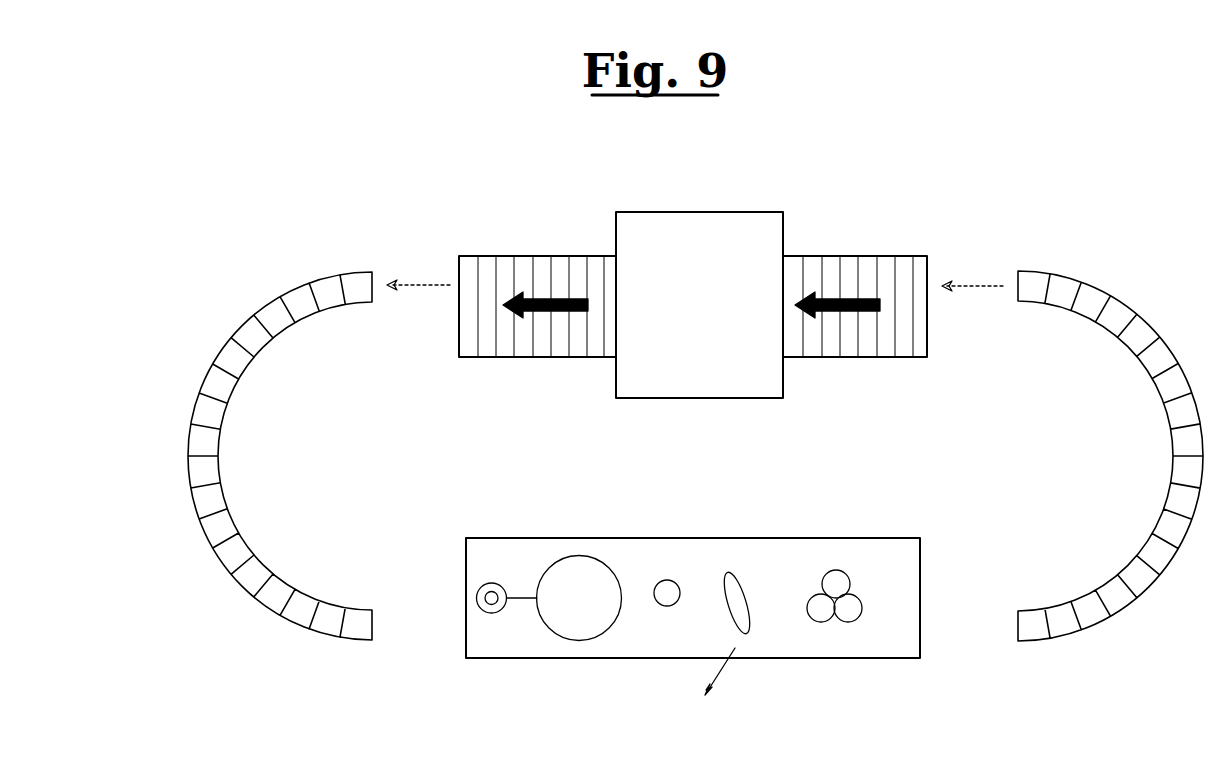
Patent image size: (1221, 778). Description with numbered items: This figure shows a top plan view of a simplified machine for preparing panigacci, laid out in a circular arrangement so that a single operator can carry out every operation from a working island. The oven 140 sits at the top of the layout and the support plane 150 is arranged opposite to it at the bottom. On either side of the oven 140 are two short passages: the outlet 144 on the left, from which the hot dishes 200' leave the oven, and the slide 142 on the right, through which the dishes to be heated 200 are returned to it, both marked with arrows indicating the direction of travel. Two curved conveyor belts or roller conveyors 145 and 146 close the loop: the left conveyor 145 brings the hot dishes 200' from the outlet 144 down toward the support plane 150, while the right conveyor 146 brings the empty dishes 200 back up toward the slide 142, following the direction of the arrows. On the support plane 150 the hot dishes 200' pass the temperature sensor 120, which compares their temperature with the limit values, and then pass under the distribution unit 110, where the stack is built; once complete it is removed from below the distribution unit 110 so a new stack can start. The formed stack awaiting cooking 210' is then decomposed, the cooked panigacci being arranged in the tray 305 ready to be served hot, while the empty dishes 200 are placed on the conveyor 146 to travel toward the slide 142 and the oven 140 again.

The distribution unit 110 is at (590, 628).
The temperature sensor 120 is at (490, 583).
The oven 140 is at (680, 390).
The slide 142 is at (820, 255).
The outlet 144 is at (541, 263).
The conveyor belt or roller conveyor 145 is at (230, 357).
The conveyor belt or roller conveyor 146 is at (1150, 383).
The support plane 150 is at (783, 540).
The dishes 200 is at (872, 642).
The hot dishes 200' is at (440, 581).
The formed stack awaiting cooking 210' is at (622, 528).
The tray 305 is at (745, 633).